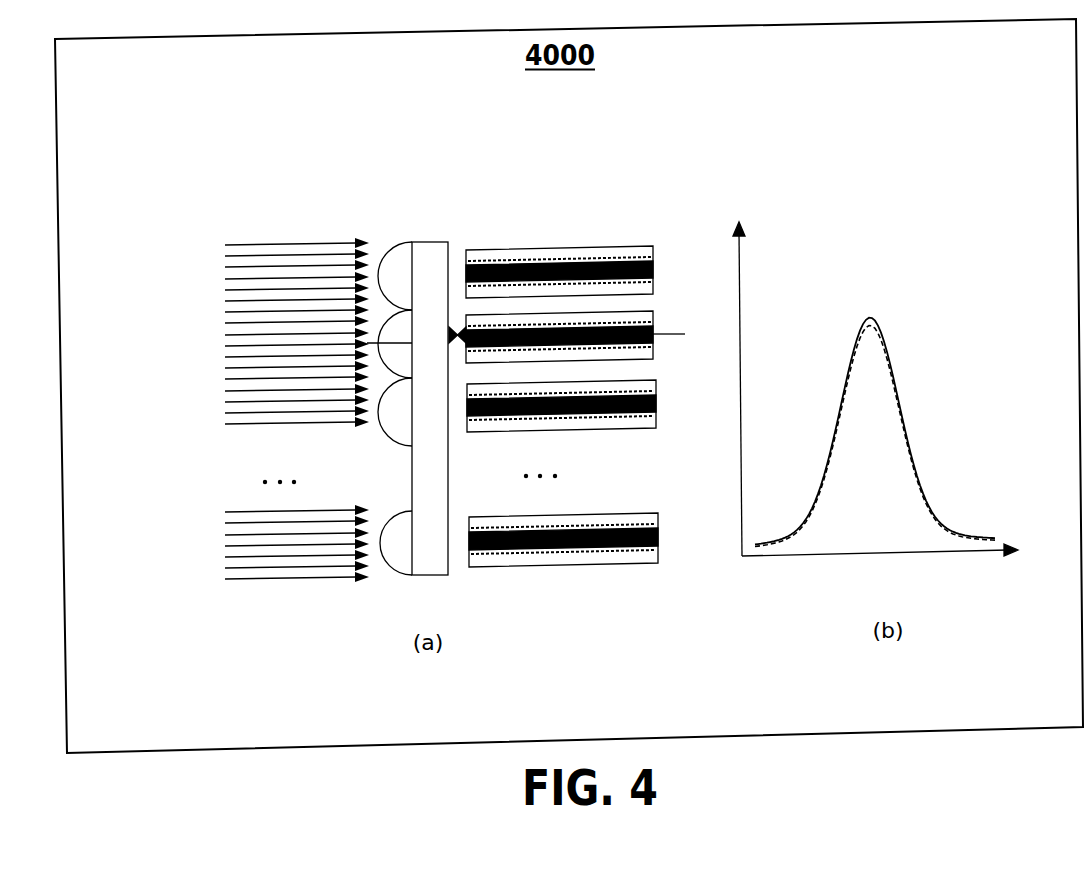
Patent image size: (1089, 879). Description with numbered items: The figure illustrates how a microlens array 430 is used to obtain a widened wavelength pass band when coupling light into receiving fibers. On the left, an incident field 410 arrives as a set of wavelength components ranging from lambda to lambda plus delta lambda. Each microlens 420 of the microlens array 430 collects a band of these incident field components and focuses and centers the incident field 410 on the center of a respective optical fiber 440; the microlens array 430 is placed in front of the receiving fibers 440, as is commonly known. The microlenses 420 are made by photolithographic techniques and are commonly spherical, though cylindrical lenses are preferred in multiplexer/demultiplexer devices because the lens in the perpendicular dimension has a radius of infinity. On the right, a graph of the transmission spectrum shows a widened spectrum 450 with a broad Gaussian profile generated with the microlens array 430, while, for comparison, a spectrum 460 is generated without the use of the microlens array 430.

The incident field 410 is at (268, 326).
The microlens 420 is at (398, 332).
The microlens array 430 is at (428, 257).
The optical fiber 440 is at (553, 313).
The widened spectrum 450 is at (885, 325).
The spectrum 460 is at (965, 530).